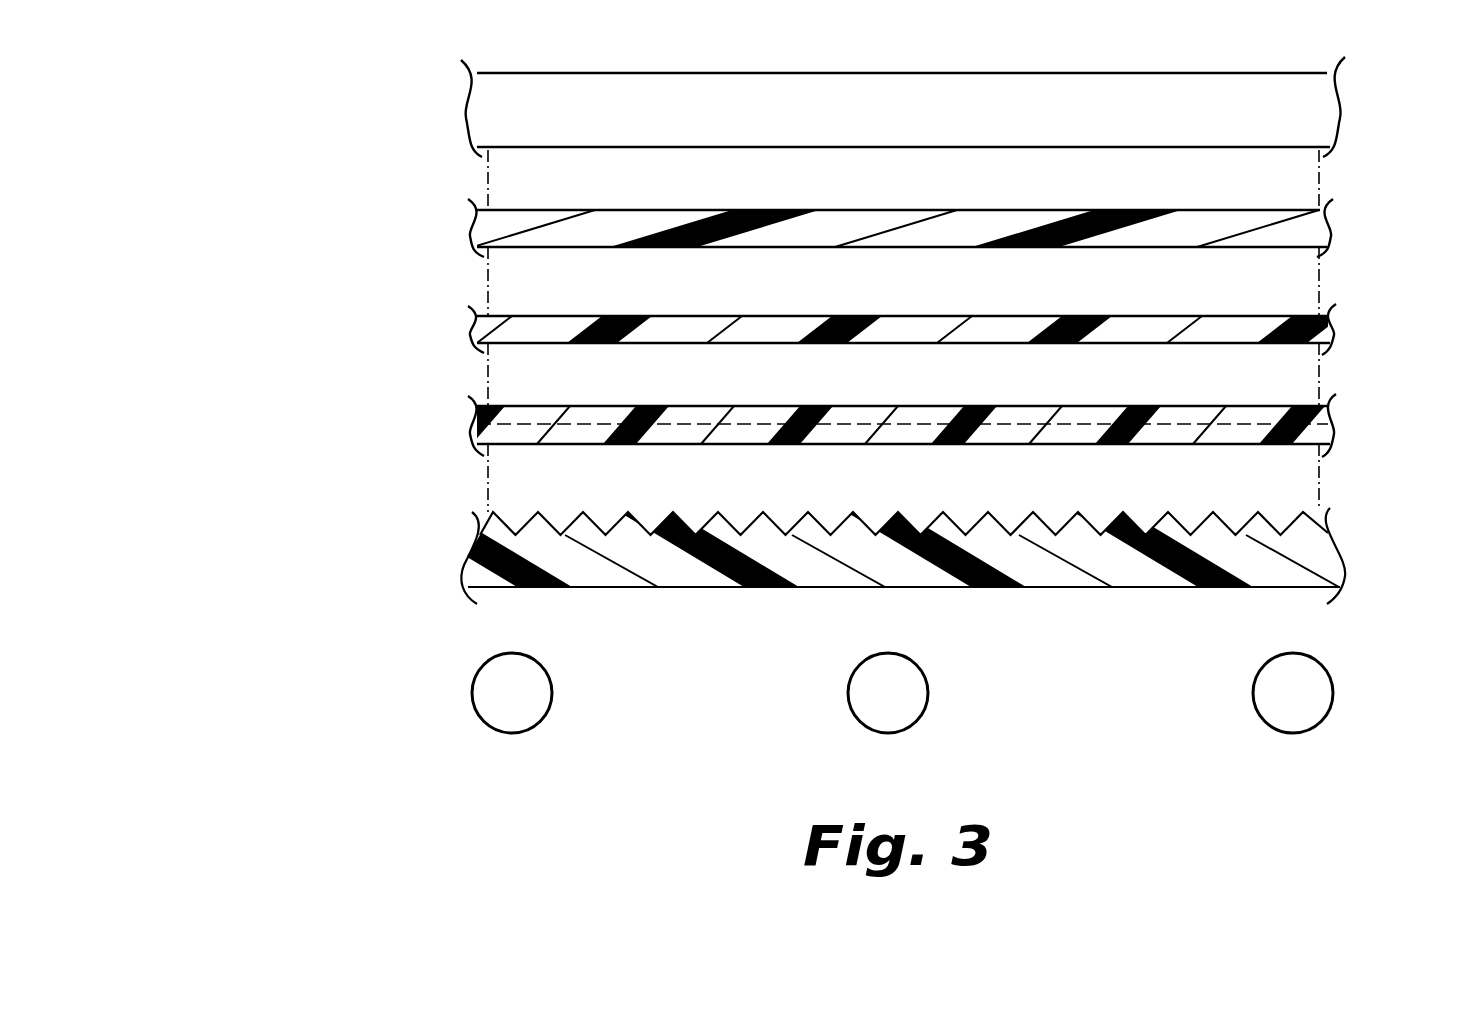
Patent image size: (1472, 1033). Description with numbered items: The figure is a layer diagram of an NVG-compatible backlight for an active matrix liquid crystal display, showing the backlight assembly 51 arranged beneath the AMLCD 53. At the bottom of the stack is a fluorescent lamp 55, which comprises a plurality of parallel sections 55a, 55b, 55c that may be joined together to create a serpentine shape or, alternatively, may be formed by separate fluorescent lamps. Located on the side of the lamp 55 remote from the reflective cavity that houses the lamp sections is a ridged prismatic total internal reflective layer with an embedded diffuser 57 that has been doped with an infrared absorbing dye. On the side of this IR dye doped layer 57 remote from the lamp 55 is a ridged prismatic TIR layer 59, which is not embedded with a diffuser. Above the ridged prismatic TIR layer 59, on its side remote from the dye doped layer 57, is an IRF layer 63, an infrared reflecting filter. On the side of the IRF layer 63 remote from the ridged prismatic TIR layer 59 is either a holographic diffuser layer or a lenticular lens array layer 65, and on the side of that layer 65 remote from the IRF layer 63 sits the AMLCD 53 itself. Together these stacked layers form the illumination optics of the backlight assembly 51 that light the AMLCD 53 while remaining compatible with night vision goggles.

The backlight assembly 51 is at (1395, 757).
The AMLCD 53 is at (1336, 110).
The fluorescent lamp 55 is at (934, 691).
The lamp section 55a is at (540, 727).
The lamp section 55b is at (916, 727).
The lamp section 55c is at (1321, 727).
The IR dye doped ridged prismatic TIR with embedded diffuser layer 57 is at (1334, 530).
The ridged prismatic TIR layer 59 is at (1334, 418).
The IRF layer 63 is at (1334, 320).
The holographic diffuser or lenticular lens array layer 65 is at (1334, 223).